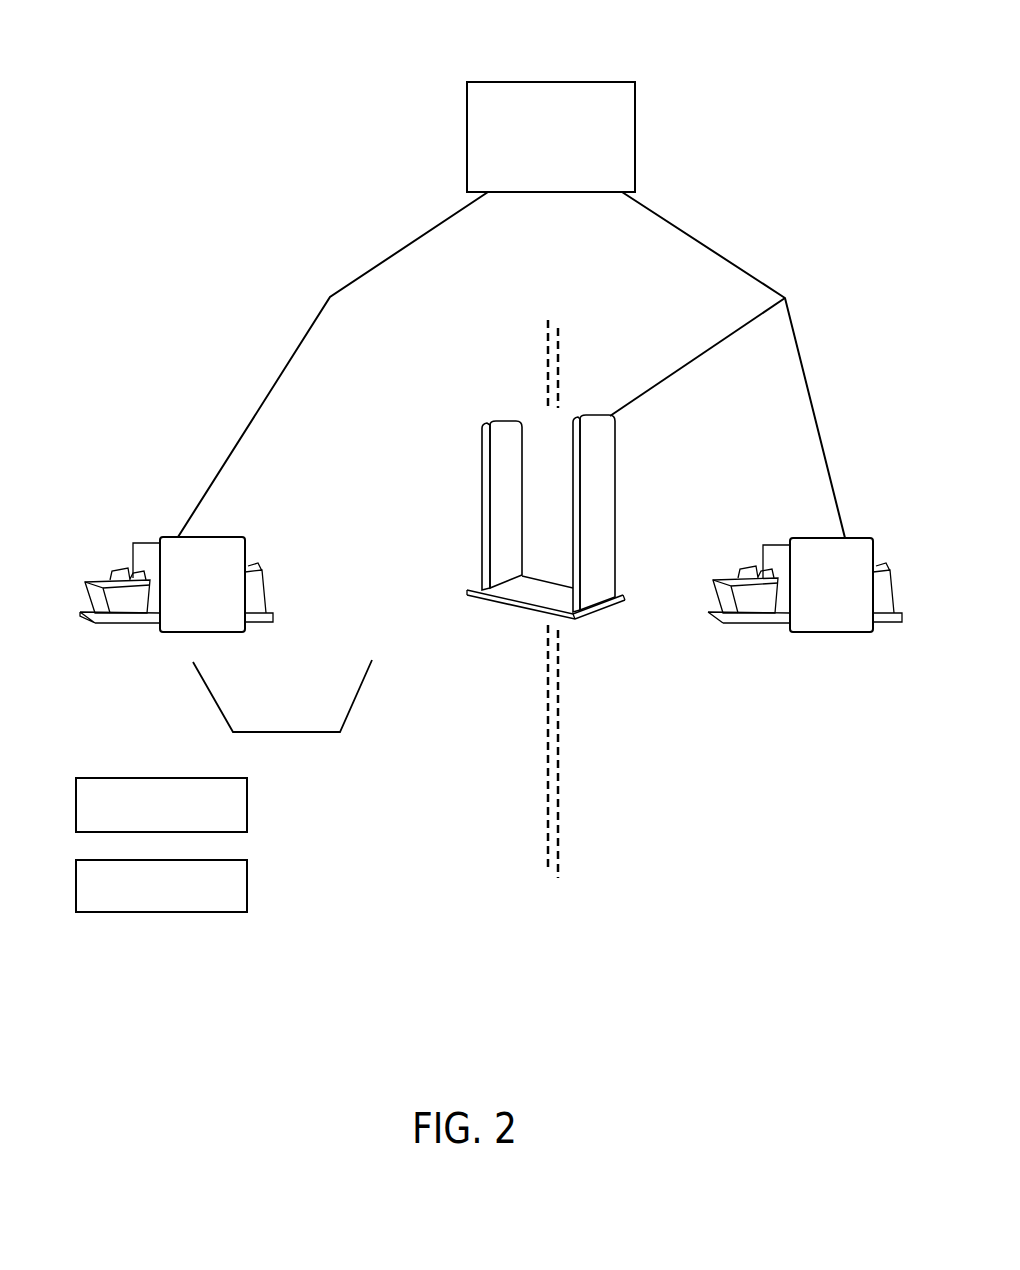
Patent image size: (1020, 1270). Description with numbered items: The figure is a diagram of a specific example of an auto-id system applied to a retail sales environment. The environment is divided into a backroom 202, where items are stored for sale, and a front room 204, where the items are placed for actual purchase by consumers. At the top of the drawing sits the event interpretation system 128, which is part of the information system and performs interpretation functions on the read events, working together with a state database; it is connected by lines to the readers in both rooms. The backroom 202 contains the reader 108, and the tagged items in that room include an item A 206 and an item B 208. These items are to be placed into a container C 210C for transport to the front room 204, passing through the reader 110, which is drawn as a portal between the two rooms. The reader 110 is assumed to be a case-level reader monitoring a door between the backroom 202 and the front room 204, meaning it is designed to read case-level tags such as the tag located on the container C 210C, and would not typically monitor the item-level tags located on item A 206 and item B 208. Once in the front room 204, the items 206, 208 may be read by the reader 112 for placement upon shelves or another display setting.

The event interpretation system 128 is at (605, 82).
The reader 108 is at (223, 536).
The reader 110 is at (596, 417).
The reader 112 is at (853, 537).
The container C 210C is at (210, 692).
The item A 206 is at (247, 803).
The item B 208 is at (247, 885).
The backroom 202 is at (228, 988).
The front room 204 is at (775, 988).